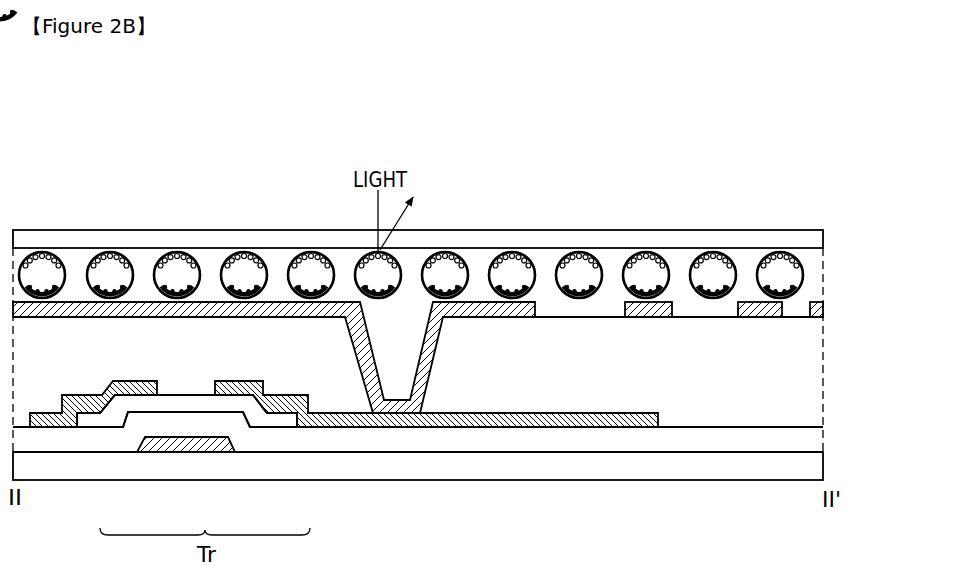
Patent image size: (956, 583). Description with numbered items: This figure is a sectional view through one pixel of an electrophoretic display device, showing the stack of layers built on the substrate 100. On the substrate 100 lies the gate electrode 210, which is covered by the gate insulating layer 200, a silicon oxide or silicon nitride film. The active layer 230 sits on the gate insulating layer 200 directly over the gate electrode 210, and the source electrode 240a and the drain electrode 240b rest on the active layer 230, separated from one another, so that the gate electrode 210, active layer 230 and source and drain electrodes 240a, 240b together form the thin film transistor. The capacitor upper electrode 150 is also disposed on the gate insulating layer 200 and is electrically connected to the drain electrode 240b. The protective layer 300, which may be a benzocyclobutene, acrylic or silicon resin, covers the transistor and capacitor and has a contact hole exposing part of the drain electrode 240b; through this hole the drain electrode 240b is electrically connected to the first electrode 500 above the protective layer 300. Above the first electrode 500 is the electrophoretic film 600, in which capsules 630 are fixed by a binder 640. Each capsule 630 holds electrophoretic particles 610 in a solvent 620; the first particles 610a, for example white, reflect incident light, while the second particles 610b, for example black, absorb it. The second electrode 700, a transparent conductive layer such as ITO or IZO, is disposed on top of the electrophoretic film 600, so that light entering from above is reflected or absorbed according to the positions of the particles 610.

The substrate 100 is at (815, 468).
The capacitor upper electrode 150 is at (508, 420).
The gate insulating layer 200 is at (815, 443).
The gate electrode 210 is at (173, 448).
The active layer 230 is at (212, 407).
The source electrode 240a is at (93, 403).
The drain electrode 240b is at (283, 403).
The protective layer 300 is at (815, 380).
The first electrode 500 is at (822, 313).
The electrophoretic film 600 is at (830, 286).
The electrophoretic particles 610 is at (702, 186).
The first particles 610a is at (633, 256).
The second particles 610b is at (652, 288).
The solvent 620 is at (715, 268).
The capsule 630 is at (798, 250).
The binder 640 is at (545, 258).
The second electrode 700 is at (815, 241).